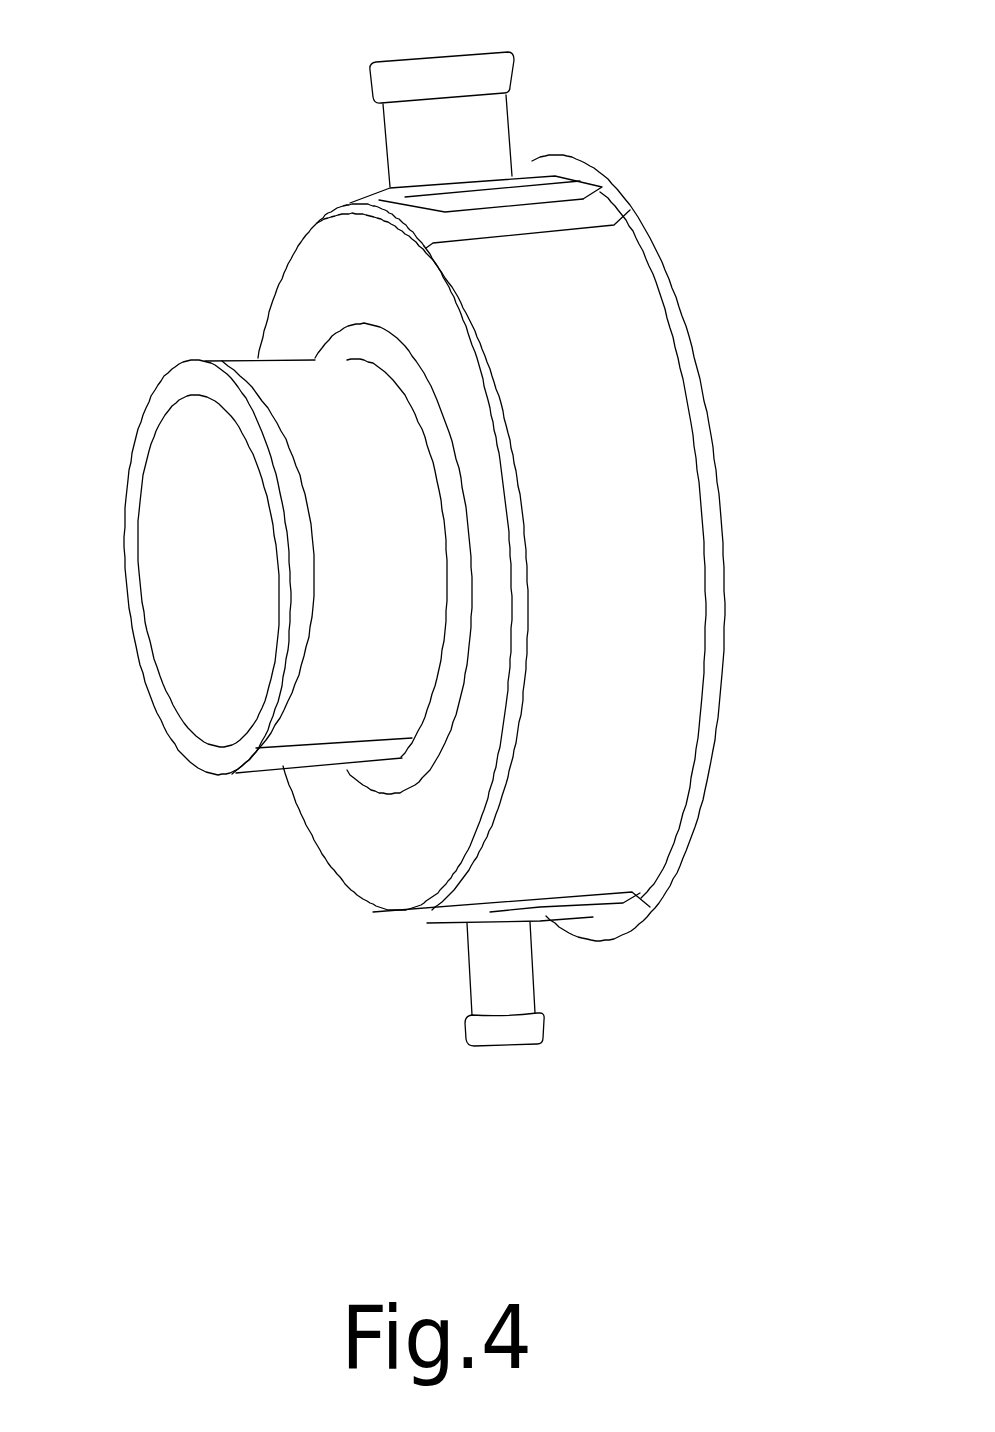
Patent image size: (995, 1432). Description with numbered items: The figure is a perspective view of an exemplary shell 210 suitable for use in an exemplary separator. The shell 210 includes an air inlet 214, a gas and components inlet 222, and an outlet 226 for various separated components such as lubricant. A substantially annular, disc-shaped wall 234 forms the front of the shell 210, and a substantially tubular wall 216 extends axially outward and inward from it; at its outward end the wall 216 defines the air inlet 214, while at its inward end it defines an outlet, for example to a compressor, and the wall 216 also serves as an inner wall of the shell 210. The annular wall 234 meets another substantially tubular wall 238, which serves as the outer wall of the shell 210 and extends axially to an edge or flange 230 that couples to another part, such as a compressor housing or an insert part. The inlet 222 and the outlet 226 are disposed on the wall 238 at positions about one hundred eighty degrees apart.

The shell 210 is at (206, 110).
The air inlet 214 is at (188, 396).
The tubular wall 216 is at (256, 365).
The gas and components inlet 222 is at (405, 60).
The outlet 226 is at (472, 1043).
The edge or flange 230 is at (625, 188).
The annular, disc-shaped wall 234 is at (298, 290).
The tubular wall 238 is at (522, 777).